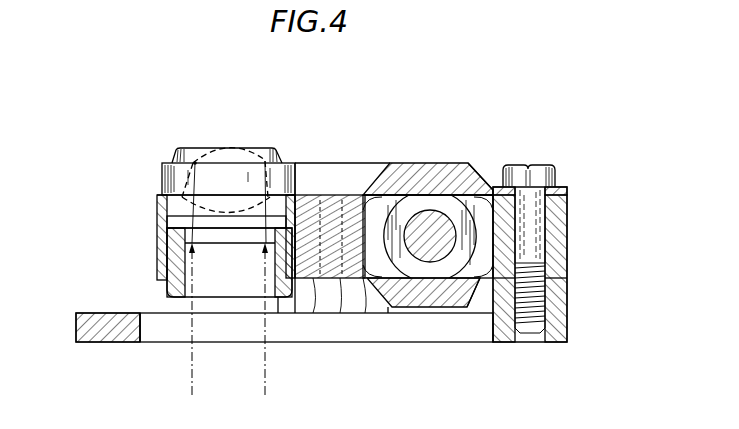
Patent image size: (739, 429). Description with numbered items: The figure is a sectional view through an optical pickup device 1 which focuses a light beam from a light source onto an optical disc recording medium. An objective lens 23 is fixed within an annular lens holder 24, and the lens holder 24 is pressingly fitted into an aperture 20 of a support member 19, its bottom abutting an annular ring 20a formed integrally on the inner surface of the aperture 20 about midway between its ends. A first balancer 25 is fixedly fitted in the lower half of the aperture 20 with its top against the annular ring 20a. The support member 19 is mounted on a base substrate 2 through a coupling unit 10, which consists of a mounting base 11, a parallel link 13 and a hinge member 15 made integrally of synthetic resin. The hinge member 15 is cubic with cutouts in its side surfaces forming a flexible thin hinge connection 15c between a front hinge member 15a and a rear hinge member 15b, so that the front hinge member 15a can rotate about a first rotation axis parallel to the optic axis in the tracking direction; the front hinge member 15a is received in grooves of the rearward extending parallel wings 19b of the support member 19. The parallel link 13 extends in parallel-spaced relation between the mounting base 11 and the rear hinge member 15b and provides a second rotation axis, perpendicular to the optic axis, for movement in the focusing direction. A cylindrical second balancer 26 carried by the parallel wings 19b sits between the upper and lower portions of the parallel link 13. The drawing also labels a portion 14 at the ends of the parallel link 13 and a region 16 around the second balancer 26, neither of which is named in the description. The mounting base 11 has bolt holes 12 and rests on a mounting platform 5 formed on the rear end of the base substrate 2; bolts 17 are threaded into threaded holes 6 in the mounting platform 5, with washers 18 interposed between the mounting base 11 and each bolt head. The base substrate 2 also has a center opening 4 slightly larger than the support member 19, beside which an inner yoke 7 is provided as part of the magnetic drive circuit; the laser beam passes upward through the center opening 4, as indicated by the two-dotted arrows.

The optical pickup device 1 is at (556, 126).
The base substrate 2 is at (110, 335).
The center opening 4 is at (143, 332).
The mounting platform 5 is at (568, 280).
The threaded holes 6 is at (545, 307).
The inner yoke 7 is at (366, 172).
The coupling unit 10 is at (485, 192).
The mounting base 11 is at (567, 200).
The bolt holes 12 is at (545, 232).
The parallel link 13 is at (452, 172).
The chamfered flange 14 is at (492, 192).
The hinge member 15 is at (330, 195).
The front hinge member 15a is at (313, 313).
The rear hinge member 15b is at (365, 313).
The hinge connection 15c is at (340, 313).
The bore 16 is at (387, 200).
The bolts 17 is at (550, 167).
The washers 18 is at (565, 188).
The support member 19 is at (158, 207).
The parallel wings 19b is at (432, 203).
The aperture 20 is at (170, 182).
The annular ring 20a is at (195, 162).
The objective lens 23 is at (250, 160).
The lens holder 24 is at (237, 168).
The first balancer 25 is at (167, 290).
The second balancer 26 is at (434, 262).